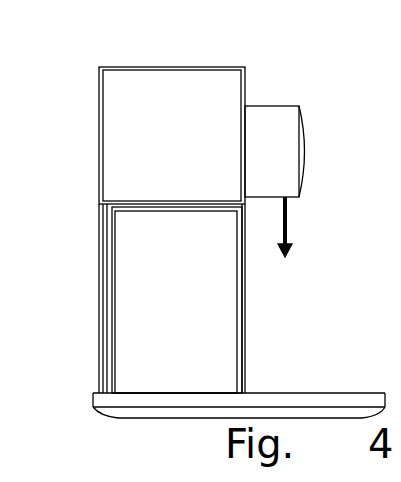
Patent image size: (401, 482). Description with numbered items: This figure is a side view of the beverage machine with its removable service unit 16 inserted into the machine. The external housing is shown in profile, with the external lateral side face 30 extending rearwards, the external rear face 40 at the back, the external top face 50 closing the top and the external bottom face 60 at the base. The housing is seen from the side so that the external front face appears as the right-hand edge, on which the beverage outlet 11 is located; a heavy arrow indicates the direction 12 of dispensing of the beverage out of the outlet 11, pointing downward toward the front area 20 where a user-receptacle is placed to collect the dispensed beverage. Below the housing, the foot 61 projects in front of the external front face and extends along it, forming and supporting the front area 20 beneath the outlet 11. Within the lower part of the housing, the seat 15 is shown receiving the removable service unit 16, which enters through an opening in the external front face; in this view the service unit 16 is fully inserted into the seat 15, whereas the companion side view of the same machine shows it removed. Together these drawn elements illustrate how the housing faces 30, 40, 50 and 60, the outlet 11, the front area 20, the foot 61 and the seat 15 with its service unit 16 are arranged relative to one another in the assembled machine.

The beverage outlet 11 is at (287, 197).
The direction of dispensing 12 is at (277, 222).
The seat 15 is at (103, 297).
The removable service unit 16 is at (193, 338).
The front area 20 is at (301, 349).
The external lateral side face 30 is at (118, 150).
The external rear face 40 is at (98, 172).
The external top face 50 is at (137, 68).
The external bottom face 60 is at (164, 419).
The foot 61 is at (103, 403).